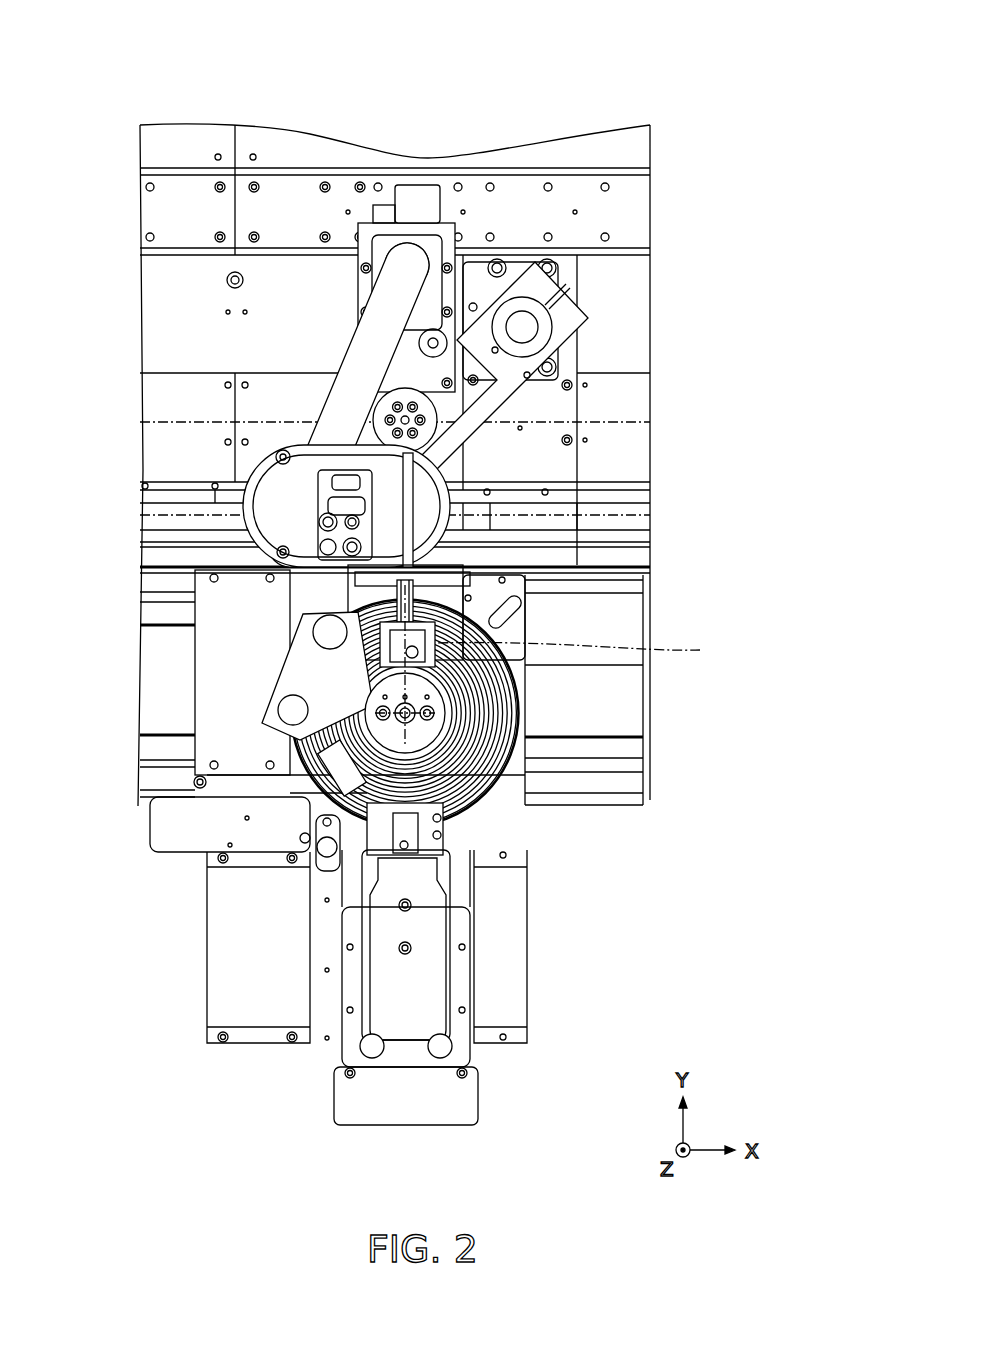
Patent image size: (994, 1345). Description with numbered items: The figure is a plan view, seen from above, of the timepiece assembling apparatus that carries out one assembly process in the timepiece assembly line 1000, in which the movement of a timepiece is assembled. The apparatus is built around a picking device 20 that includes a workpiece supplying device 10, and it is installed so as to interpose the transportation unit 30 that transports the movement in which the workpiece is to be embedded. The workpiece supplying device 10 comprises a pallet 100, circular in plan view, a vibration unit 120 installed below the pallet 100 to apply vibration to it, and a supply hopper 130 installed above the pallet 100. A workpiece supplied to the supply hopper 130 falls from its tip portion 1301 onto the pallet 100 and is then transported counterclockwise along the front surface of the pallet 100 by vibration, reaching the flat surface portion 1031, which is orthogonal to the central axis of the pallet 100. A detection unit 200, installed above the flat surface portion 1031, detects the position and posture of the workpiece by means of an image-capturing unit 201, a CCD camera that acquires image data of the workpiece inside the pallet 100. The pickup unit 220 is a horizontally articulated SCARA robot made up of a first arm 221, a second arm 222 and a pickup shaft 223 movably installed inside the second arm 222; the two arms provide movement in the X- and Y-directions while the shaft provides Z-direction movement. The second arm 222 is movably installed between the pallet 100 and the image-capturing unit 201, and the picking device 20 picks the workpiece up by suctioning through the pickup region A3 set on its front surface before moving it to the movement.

The timepiece assembly line 1000 is at (733, 72).
The picking device 20 is at (563, 408).
The workpiece supplying device 10 is at (298, 882).
The transportation unit 30 is at (530, 512).
The pickup unit 220 is at (447, 490).
The first arm 221 is at (425, 398).
The second arm 222 is at (352, 462).
The pickup shaft 223 is at (384, 512).
The detection unit 200 is at (418, 634).
The image-capturing unit 201 is at (407, 623).
The pickup region A3 is at (552, 665).
The pallet 100 is at (527, 717).
The flat surface portion 1031 is at (513, 698).
The vibration unit 120 is at (512, 803).
The tip portion 1301 is at (423, 833).
The supply hopper 130 is at (430, 930).